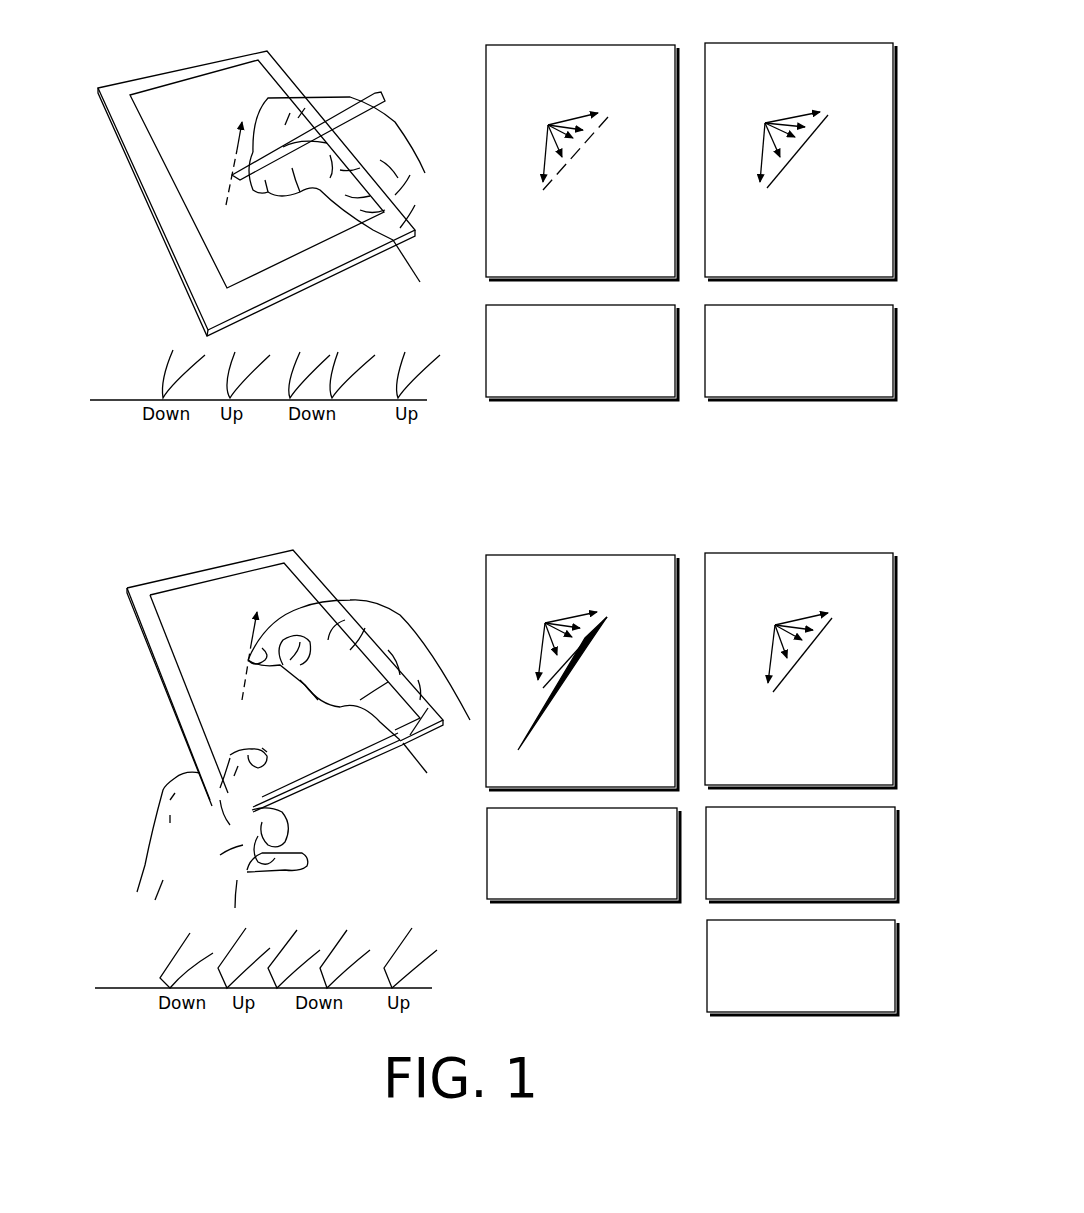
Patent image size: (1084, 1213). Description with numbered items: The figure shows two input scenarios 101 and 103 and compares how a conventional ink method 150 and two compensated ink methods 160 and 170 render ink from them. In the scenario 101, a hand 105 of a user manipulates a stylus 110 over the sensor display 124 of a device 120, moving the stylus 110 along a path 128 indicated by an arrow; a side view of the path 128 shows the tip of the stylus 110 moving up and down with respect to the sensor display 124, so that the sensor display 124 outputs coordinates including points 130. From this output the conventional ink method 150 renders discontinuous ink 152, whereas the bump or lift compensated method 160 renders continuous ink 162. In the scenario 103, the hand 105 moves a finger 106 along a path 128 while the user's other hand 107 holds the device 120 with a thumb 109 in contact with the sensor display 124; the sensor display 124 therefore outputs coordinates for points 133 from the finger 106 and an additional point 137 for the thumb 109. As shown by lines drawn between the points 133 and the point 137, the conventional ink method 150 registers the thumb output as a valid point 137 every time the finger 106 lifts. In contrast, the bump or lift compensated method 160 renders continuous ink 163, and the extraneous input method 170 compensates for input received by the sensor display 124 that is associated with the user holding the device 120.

The scenario 101 is at (181, 26).
The scenario 103 is at (180, 970).
The hand 105 is at (370, 140).
The finger 106 is at (257, 673).
The other hand 107 is at (180, 765).
The thumb 109 is at (262, 748).
The stylus 110 is at (228, 195).
The device 120 is at (150, 75).
The sensor display 124 is at (262, 88).
The path 128 is at (205, 170).
The points 130 is at (548, 125).
The points 133 is at (545, 623).
The point 137 is at (525, 755).
The conventional ink method 150 is at (583, 603).
The discontinuous ink 152 is at (582, 174).
The bump or lift compensated method 160 is at (801, 603).
The continuous ink 162 is at (802, 180).
The continuous ink 163 is at (810, 680).
The extraneous input method 170 is at (802, 967).